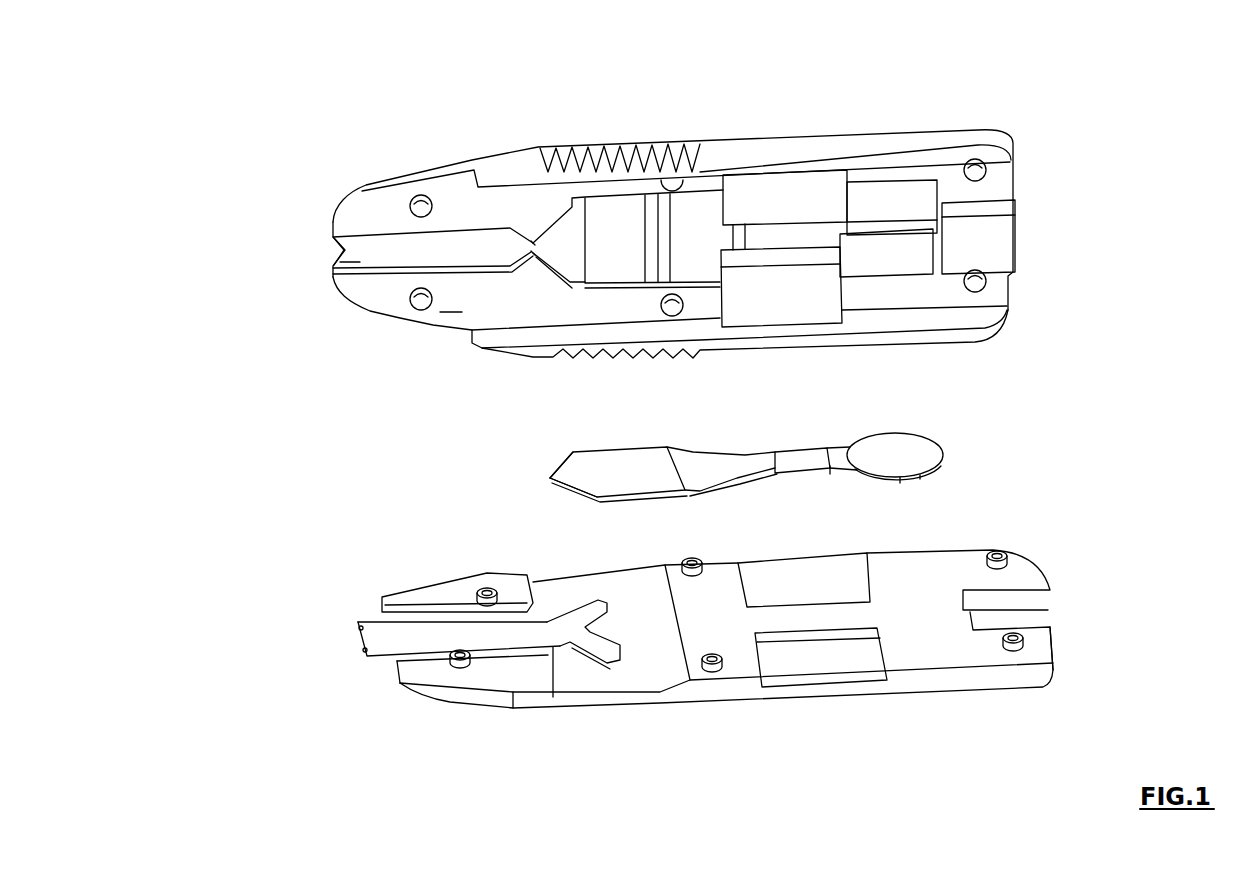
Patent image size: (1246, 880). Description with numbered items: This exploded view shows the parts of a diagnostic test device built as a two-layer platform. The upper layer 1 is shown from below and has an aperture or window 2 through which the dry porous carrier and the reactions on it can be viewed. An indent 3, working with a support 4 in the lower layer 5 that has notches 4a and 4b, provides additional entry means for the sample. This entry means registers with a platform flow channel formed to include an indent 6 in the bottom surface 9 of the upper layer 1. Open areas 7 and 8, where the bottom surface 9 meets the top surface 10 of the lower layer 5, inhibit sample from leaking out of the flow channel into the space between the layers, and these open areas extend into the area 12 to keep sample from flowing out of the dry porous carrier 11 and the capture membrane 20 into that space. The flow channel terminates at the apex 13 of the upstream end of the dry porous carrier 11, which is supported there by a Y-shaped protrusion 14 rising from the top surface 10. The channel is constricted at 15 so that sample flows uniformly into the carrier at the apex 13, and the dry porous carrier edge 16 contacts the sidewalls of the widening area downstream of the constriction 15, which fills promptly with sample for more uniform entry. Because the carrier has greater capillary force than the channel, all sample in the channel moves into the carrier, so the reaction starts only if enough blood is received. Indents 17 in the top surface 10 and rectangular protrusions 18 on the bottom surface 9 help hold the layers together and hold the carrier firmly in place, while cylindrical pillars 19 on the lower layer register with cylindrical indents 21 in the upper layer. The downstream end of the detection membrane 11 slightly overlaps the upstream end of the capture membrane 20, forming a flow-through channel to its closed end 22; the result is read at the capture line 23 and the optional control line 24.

The upper layer 1 is at (1017, 238).
The aperture or window 2 is at (803, 238).
The indent 3 is at (333, 250).
The support 4 is at (390, 640).
The notch 4a is at (358, 628).
The notch 4b is at (363, 650).
The lower layer 5 is at (1040, 593).
The indent 6 is at (360, 262).
The open area 7 is at (395, 610).
The open area 8 is at (403, 660).
The bottom surface 9 is at (462, 312).
The top surface 10 is at (937, 655).
The dry porous carrier 11 is at (617, 463).
The area 12 is at (640, 678).
The apex 13 is at (552, 478).
The Y-shaped protrusion 14 is at (597, 652).
The constriction 15 is at (533, 243).
The dry porous carrier edge 16 is at (577, 490).
The indents 17 is at (800, 660).
The rectangular protrusions 18 is at (782, 298).
The cylindrical pillars 19 is at (1020, 642).
The capture membrane 20 is at (743, 458).
The cylindrical indents 21 is at (967, 283).
The closed end 22 is at (943, 453).
The capture line 23 is at (787, 477).
The control line 24 is at (853, 470).